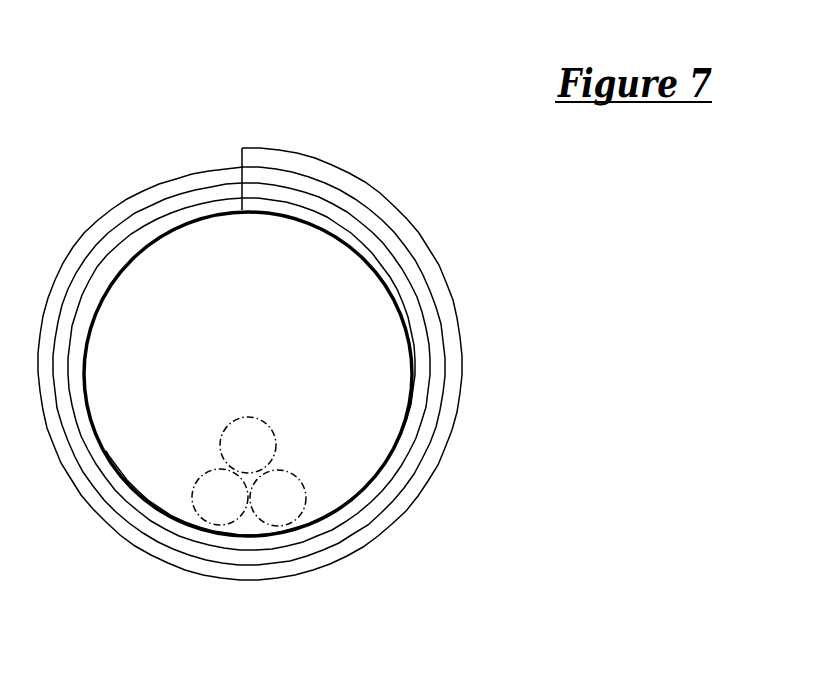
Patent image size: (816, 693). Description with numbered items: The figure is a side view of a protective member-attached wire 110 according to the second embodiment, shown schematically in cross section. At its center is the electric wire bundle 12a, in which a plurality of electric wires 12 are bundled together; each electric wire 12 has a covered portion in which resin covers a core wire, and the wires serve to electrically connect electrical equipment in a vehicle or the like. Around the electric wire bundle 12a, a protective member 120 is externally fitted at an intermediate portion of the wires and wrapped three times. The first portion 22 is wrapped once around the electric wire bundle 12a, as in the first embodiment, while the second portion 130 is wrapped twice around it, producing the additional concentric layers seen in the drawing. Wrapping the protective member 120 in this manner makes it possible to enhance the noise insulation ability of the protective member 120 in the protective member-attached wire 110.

The protective member-attached wire 110 is at (155, 95).
The protective member 120 is at (422, 223).
The second portion 130 is at (233, 262).
The first portion 22 is at (248, 605).
The electric wire 12 is at (292, 478).
The electric wire bundle 12a is at (365, 467).